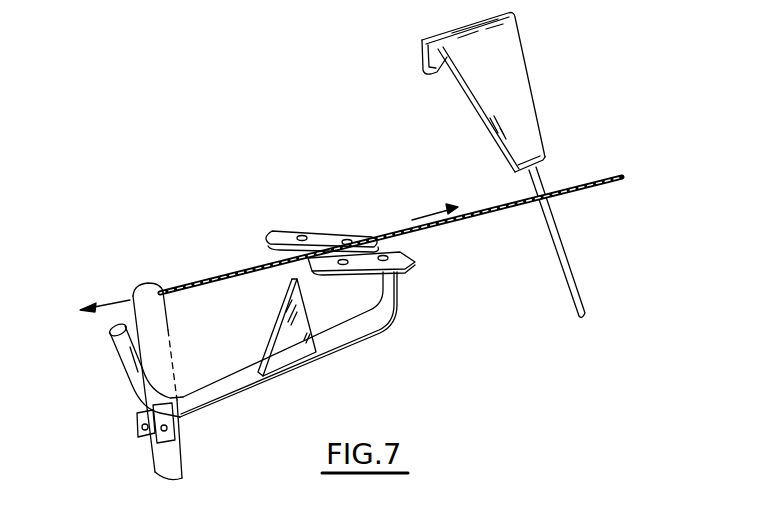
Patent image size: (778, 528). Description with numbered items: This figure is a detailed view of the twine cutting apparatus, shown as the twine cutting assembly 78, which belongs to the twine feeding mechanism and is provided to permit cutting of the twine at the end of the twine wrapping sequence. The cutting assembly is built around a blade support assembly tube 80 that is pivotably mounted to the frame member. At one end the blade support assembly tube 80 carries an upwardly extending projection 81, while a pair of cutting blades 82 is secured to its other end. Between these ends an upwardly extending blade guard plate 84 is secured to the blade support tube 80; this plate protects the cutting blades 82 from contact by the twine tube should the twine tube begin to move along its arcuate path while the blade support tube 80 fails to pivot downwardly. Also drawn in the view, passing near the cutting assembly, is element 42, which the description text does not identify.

The strip 42 is at (163, 323).
The twine cutting assembly 78 is at (341, 354).
The blade support assembly tube 80 is at (227, 388).
The upwardly extending projection 81 is at (115, 347).
The cutting blades 82 is at (328, 260).
The blade guard plate 84 is at (303, 316).